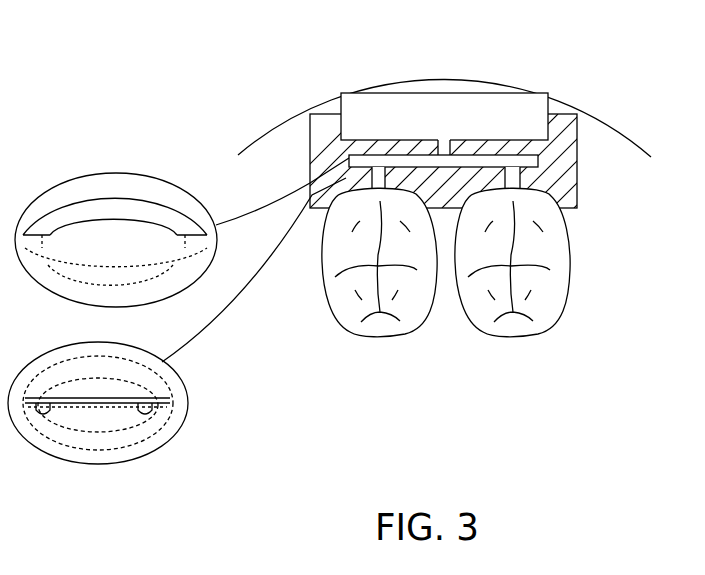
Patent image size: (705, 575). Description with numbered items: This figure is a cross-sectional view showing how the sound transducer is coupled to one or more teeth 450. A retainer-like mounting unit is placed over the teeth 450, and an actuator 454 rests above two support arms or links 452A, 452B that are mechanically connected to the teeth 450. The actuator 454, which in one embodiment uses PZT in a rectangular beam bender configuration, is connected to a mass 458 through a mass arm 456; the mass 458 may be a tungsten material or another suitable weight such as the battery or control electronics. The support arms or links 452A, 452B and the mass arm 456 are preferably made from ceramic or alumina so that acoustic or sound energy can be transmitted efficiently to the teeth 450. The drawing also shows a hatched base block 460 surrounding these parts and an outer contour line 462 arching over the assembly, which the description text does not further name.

The teeth 450 is at (414, 313).
The support arm or link 452A is at (380, 187).
The support arm or link 452B is at (543, 190).
The actuator 454 is at (97, 209).
The mass arm 456 is at (446, 147).
The mass 458 is at (528, 103).
The base block 460 is at (568, 197).
The outer contour 462 is at (281, 143).